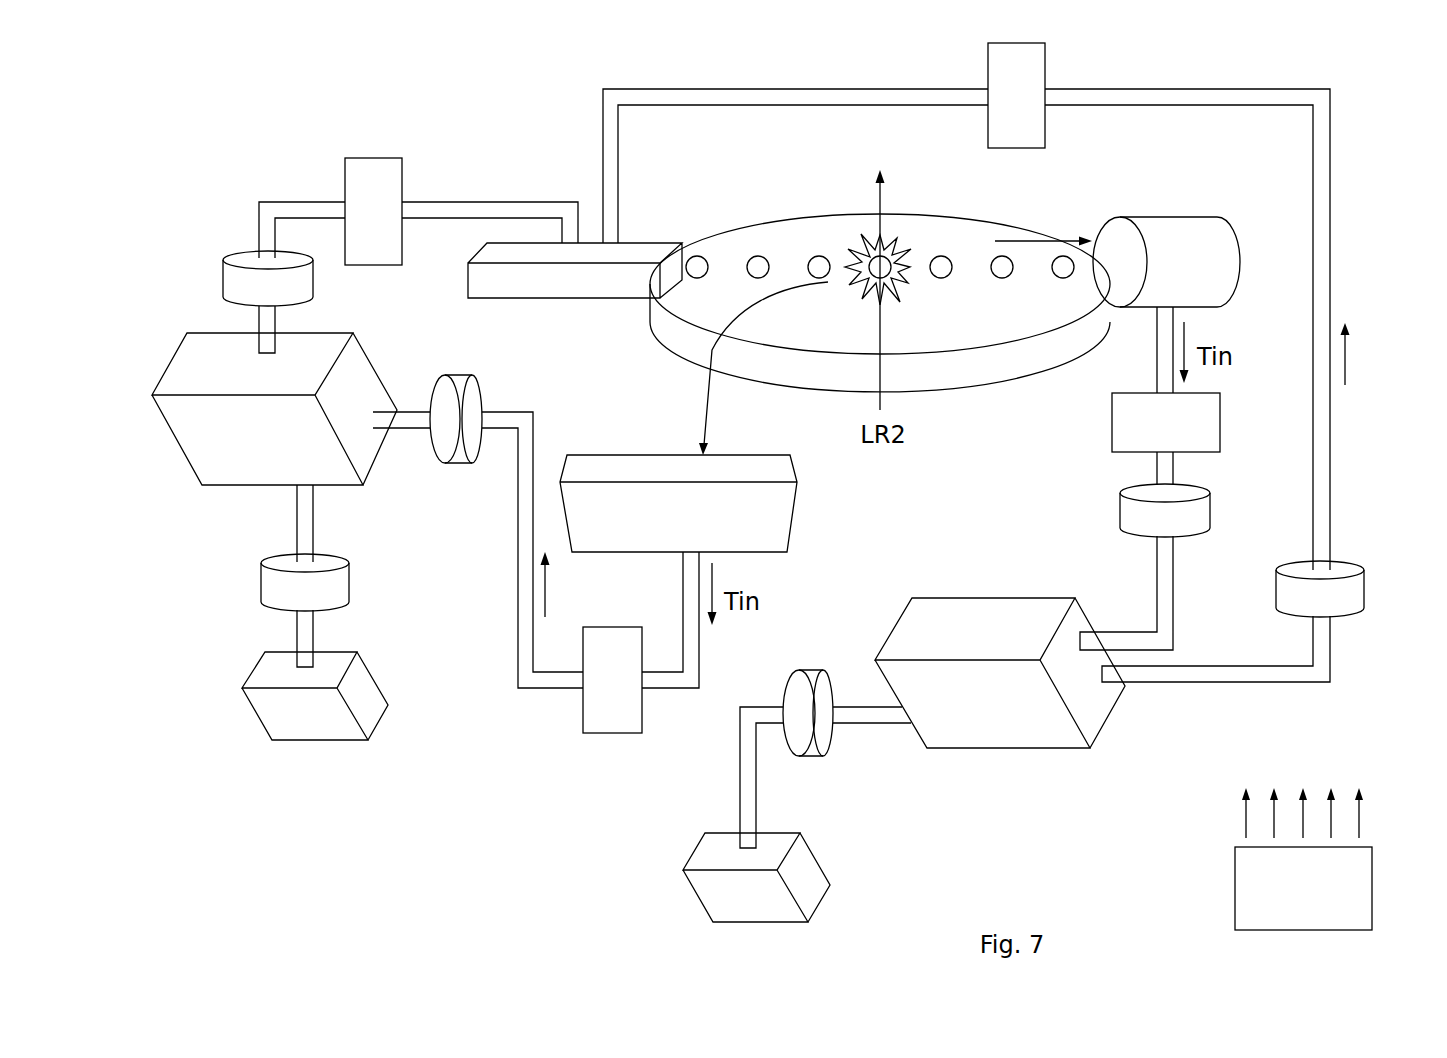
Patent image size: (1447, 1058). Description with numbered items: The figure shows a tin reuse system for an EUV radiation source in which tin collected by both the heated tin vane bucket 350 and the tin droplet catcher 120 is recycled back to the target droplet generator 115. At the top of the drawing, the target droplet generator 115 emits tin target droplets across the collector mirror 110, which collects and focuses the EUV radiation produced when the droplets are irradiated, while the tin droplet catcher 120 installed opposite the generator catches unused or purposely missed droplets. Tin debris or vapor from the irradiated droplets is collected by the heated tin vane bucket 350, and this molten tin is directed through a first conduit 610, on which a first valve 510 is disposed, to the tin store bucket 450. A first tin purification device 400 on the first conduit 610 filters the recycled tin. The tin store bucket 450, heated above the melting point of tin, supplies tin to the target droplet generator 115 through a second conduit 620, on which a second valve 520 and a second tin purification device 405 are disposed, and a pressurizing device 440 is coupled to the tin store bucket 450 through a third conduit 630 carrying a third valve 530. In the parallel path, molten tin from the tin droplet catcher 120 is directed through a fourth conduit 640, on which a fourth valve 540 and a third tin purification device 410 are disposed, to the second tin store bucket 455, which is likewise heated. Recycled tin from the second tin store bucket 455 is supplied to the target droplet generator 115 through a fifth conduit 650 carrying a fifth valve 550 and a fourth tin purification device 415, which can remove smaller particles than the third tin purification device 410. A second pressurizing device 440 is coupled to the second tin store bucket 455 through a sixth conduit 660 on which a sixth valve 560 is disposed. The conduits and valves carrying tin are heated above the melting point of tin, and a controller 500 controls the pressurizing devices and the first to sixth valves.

The collector mirror 110 is at (1010, 372).
The target droplet generator 115 is at (652, 250).
The tin droplet catcher 120 is at (1172, 222).
The heated tin vane bucket 350 is at (790, 512).
The first tin purification device 400 is at (605, 722).
The second tin purification device 405 is at (350, 172).
The third tin purification device 410 is at (1130, 430).
The fourth tin purification device 415 is at (988, 52).
The pressurizing device 440 is at (262, 672).
The tin store bucket 450 is at (172, 378).
The second tin store bucket 455 is at (1008, 750).
The controller 500 is at (1325, 903).
The first valve 510 is at (452, 453).
The second valve 520 is at (225, 283).
The third valve 530 is at (262, 585).
The fourth valve 540 is at (1130, 512).
The fifth valve 550 is at (1355, 590).
The sixth valve 560 is at (803, 678).
The first conduit 610 is at (520, 618).
The second conduit 620 is at (472, 207).
The third conduit 630 is at (297, 520).
The fourth conduit 640 is at (1157, 578).
The fifth conduit 650 is at (1142, 683).
The sixth conduit 660 is at (757, 788).